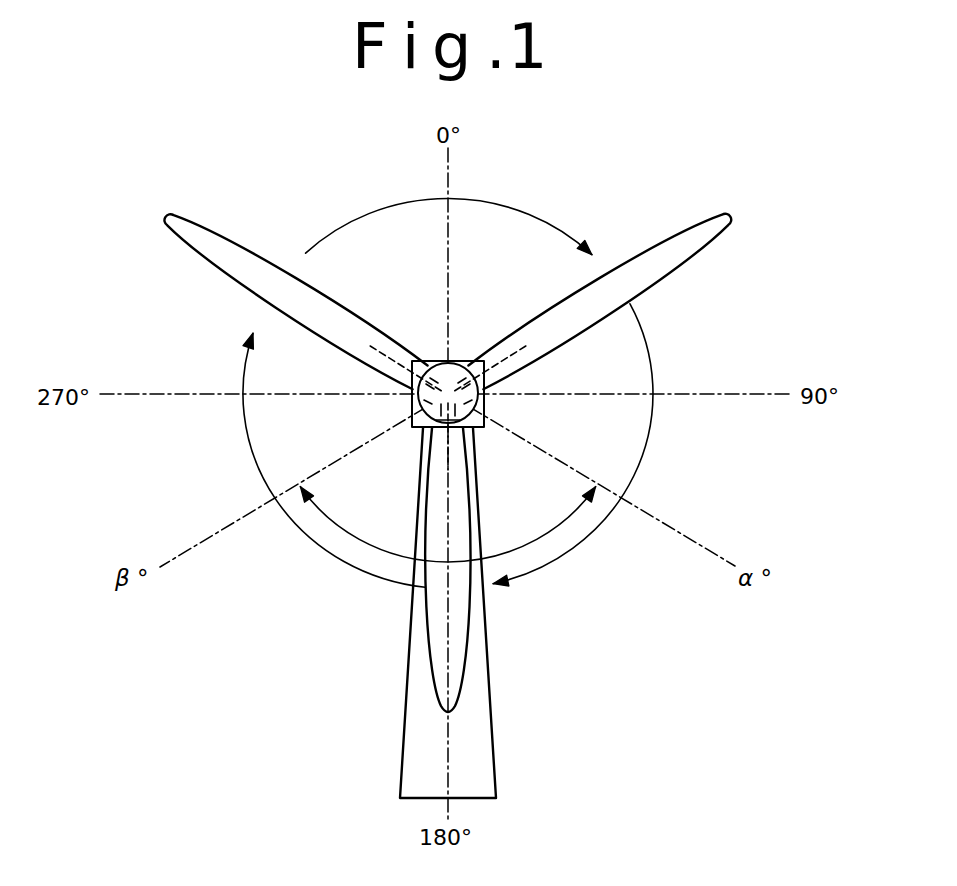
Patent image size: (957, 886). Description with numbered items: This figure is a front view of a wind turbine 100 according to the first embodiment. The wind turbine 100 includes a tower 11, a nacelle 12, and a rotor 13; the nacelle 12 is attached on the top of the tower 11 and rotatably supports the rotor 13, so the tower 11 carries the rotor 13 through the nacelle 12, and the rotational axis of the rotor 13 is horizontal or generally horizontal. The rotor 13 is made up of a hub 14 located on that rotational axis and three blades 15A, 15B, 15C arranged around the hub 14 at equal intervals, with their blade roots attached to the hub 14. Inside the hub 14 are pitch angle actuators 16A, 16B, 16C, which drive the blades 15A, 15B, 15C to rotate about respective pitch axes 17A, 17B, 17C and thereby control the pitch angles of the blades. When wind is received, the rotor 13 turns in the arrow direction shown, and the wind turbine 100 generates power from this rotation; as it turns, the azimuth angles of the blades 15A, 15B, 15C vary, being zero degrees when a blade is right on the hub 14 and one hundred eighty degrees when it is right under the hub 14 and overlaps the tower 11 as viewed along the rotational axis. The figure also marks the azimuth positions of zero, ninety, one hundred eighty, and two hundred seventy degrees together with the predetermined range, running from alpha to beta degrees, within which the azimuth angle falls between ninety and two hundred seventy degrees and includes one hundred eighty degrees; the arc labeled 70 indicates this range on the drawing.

The wind turbine 100 is at (226, 168).
The tower 11 is at (492, 731).
The nacelle 12 is at (475, 360).
The rotor 13 is at (702, 178).
The hub 14 is at (437, 360).
The blade 15A is at (428, 637).
The blade 15B is at (693, 262).
The blade 15C is at (190, 250).
The pitch angle actuator 16A is at (440, 430).
The pitch angle actuator 16B is at (482, 396).
The pitch angle actuator 16C is at (400, 393).
The pitch axis 17A is at (448, 467).
The pitch axis 17B is at (505, 355).
The pitch axis 17C is at (407, 347).
The angular range 70 is at (530, 547).